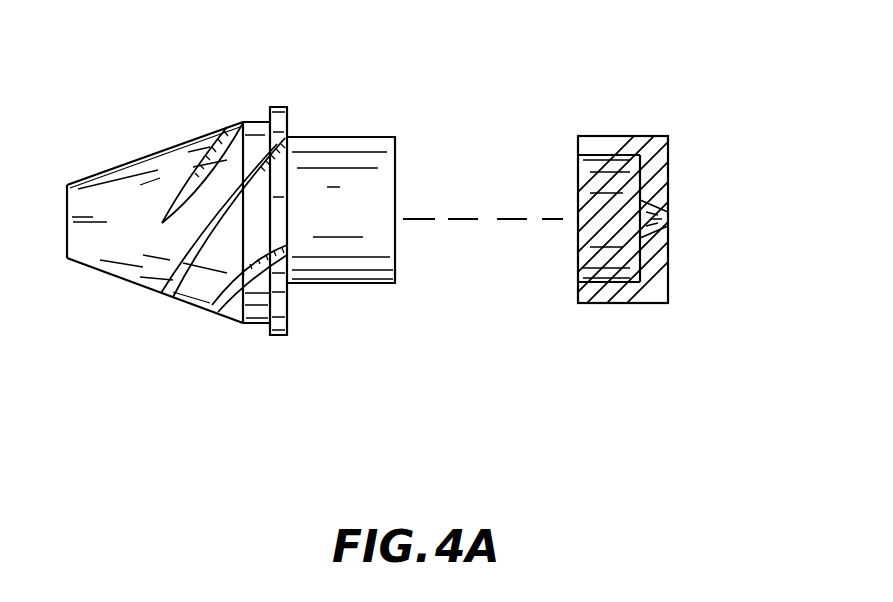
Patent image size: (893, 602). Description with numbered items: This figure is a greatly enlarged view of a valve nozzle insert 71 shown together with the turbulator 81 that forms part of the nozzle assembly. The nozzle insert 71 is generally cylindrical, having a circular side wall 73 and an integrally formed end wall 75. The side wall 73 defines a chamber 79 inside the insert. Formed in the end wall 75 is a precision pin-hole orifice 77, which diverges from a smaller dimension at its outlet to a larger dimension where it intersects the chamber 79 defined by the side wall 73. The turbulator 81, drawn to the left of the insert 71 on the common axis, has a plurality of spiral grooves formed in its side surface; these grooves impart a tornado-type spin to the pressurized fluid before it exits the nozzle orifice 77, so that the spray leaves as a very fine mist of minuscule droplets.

The nozzle insert 71 is at (668, 143).
The circular side wall 73 is at (601, 136).
The end wall 75 is at (668, 248).
The pin-hole orifice 77 is at (665, 218).
The chamber 79 is at (606, 282).
The turbulator 81 is at (207, 132).